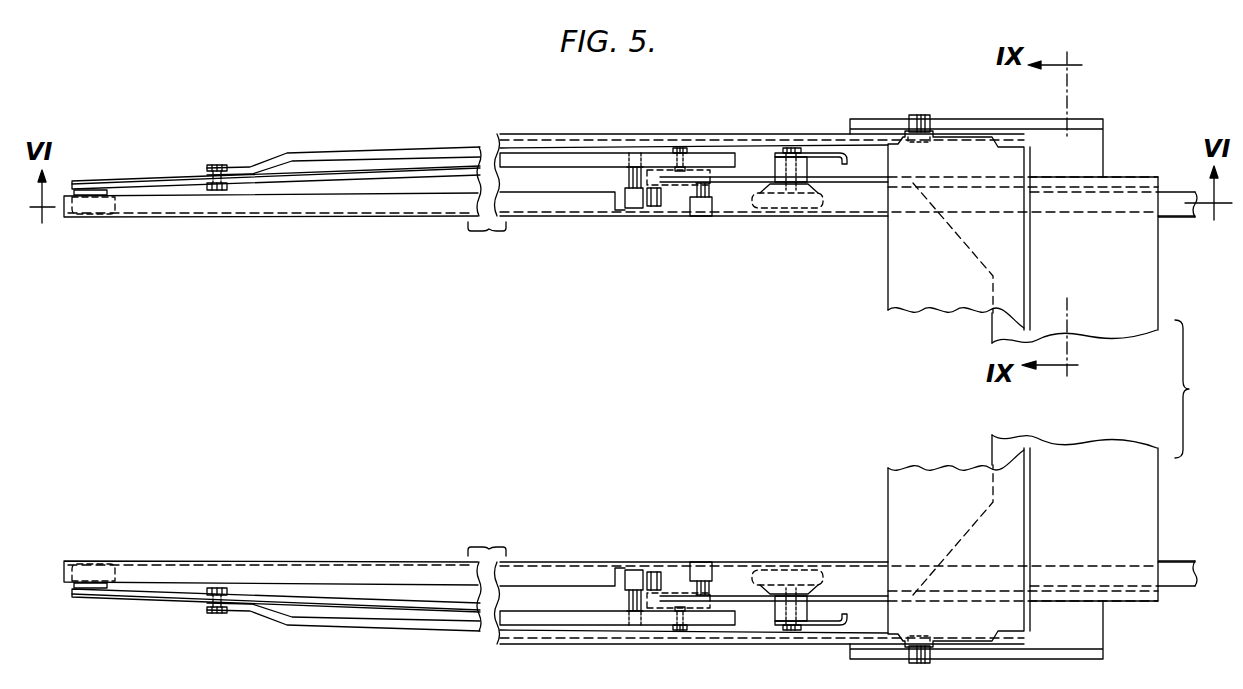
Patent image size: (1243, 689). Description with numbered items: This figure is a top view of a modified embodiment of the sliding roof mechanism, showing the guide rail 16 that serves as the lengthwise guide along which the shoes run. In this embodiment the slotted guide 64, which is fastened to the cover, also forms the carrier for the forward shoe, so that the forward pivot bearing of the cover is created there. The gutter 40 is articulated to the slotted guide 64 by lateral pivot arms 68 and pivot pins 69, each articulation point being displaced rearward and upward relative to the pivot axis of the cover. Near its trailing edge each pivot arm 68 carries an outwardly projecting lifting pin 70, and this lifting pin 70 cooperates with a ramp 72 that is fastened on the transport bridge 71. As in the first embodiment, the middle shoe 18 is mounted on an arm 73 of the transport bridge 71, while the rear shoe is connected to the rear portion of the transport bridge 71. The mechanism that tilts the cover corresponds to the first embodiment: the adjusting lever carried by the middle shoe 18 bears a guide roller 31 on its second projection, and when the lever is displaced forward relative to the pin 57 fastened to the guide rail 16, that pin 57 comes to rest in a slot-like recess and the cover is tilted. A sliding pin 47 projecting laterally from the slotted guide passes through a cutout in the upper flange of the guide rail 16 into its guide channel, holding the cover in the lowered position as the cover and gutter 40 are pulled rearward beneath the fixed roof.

The guide rail 16 is at (437, 205).
The middle shoe 18 is at (808, 216).
The guide roller 31 is at (653, 207).
The gutter 40 is at (940, 307).
The sliding pin 47 is at (625, 197).
The pin 57 is at (698, 218).
The slotted guide 64 is at (552, 157).
The pivot arm 68 is at (344, 152).
The pivot pin 69 is at (218, 164).
The lifting pin 70 is at (920, 113).
The transport bridge 71 is at (1135, 325).
The ramp 72 is at (1013, 120).
The arm 73 is at (828, 167).